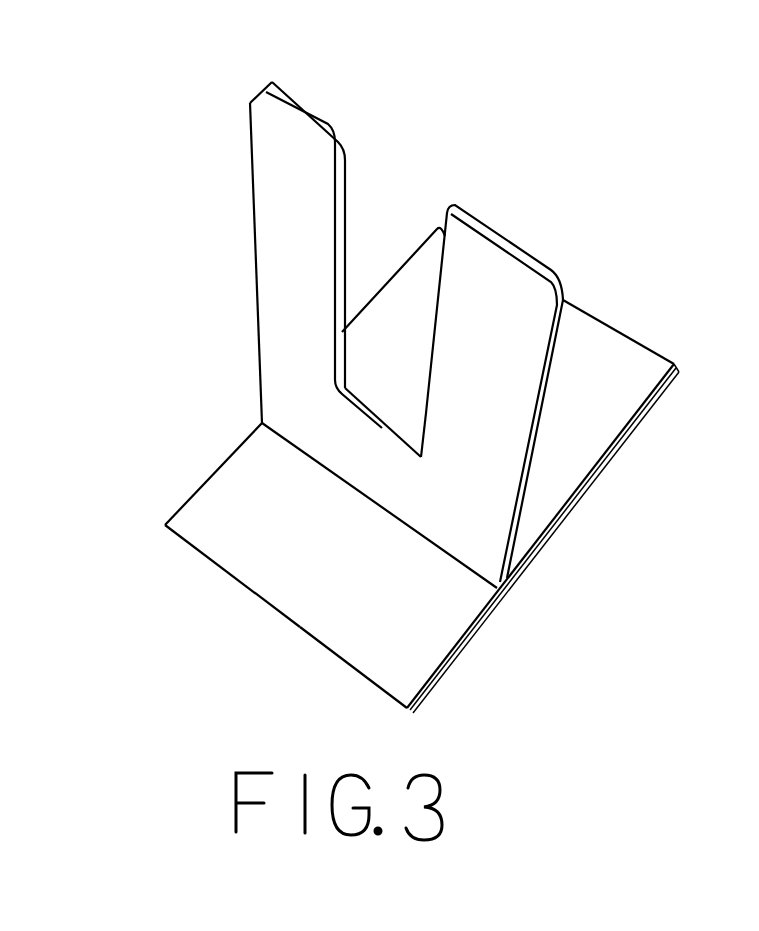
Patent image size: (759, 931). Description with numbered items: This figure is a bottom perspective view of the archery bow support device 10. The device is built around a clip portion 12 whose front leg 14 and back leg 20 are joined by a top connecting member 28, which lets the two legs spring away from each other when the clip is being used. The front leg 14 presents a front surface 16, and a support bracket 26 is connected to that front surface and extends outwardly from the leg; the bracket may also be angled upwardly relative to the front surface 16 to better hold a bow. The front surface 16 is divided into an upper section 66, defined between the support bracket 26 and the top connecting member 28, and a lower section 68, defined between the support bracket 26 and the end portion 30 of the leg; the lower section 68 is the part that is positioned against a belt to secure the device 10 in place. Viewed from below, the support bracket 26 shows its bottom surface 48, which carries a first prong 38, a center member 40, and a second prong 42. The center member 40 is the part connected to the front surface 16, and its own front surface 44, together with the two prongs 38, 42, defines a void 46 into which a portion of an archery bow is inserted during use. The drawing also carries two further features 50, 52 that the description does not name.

The archery bow support device 10 is at (583, 120).
The clip portion 12 is at (617, 508).
The front leg 14 is at (616, 397).
The front surface 16 is at (408, 288).
The back leg 20 is at (517, 583).
The support bracket 26 is at (217, 342).
The top connecting member 28 is at (647, 342).
The end portion 30 is at (340, 658).
The first prong 38 is at (267, 198).
The center member 40 is at (362, 457).
The second prong 42 is at (495, 295).
The front surface 44 is at (380, 420).
The void 46 is at (367, 248).
The bottom surface 48 is at (455, 435).
The rounded corner 50 is at (350, 383).
The notch corner 52 is at (420, 458).
The upper section 66 is at (575, 353).
The lower section 68 is at (297, 563).